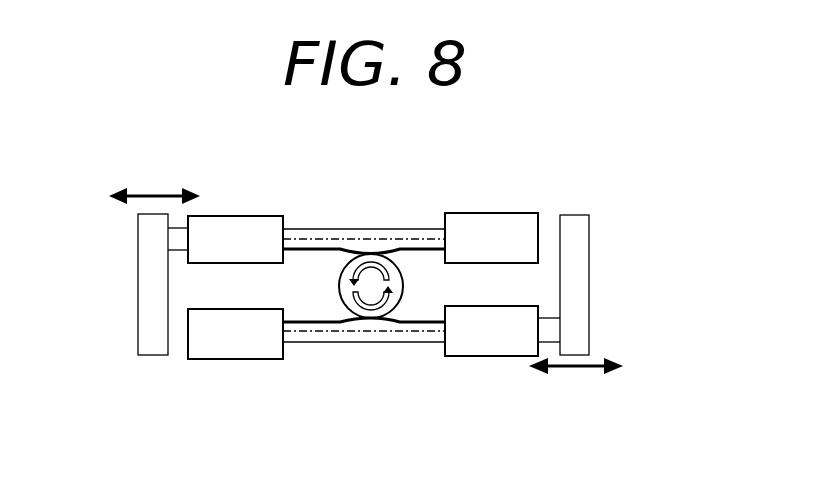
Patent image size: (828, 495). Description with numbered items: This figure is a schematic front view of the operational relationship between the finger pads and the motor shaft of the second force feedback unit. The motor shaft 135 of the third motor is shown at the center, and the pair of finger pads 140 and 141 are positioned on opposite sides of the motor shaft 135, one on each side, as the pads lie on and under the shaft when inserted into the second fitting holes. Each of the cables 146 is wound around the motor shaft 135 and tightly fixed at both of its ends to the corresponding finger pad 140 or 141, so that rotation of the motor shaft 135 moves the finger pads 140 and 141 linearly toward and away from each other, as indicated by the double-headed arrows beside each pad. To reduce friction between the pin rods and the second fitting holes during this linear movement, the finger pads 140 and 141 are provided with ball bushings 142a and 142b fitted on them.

The motor shaft 135 is at (358, 258).
The finger pad 140 is at (583, 257).
The finger pad 141 is at (147, 302).
The ball bushing 142a is at (222, 350).
The ball bushing 142b is at (477, 348).
The cable 146 is at (360, 318).